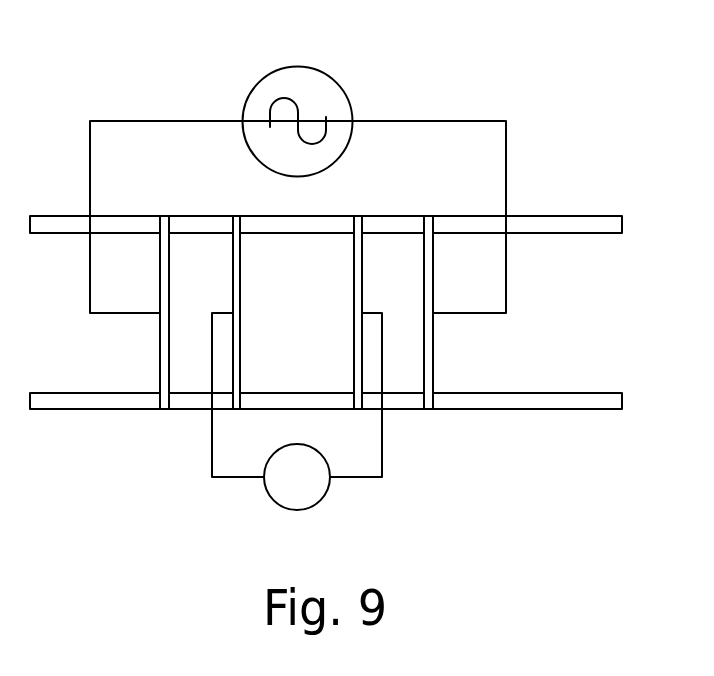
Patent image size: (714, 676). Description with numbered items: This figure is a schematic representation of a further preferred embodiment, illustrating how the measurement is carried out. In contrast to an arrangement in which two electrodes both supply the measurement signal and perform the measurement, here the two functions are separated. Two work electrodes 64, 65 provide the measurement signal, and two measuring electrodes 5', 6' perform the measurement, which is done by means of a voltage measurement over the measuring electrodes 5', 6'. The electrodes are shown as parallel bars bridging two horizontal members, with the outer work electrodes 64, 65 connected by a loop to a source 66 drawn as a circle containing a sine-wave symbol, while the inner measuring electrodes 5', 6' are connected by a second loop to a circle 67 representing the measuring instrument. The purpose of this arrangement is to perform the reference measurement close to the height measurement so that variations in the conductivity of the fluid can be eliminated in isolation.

The work electrode 64 is at (165, 312).
The work electrode 65 is at (428, 334).
The measuring electrode 5' is at (256, 312).
The measuring electrode 6' is at (332, 312).
The AC voltage source 66 is at (297, 67).
The measuring device 67 is at (297, 411).